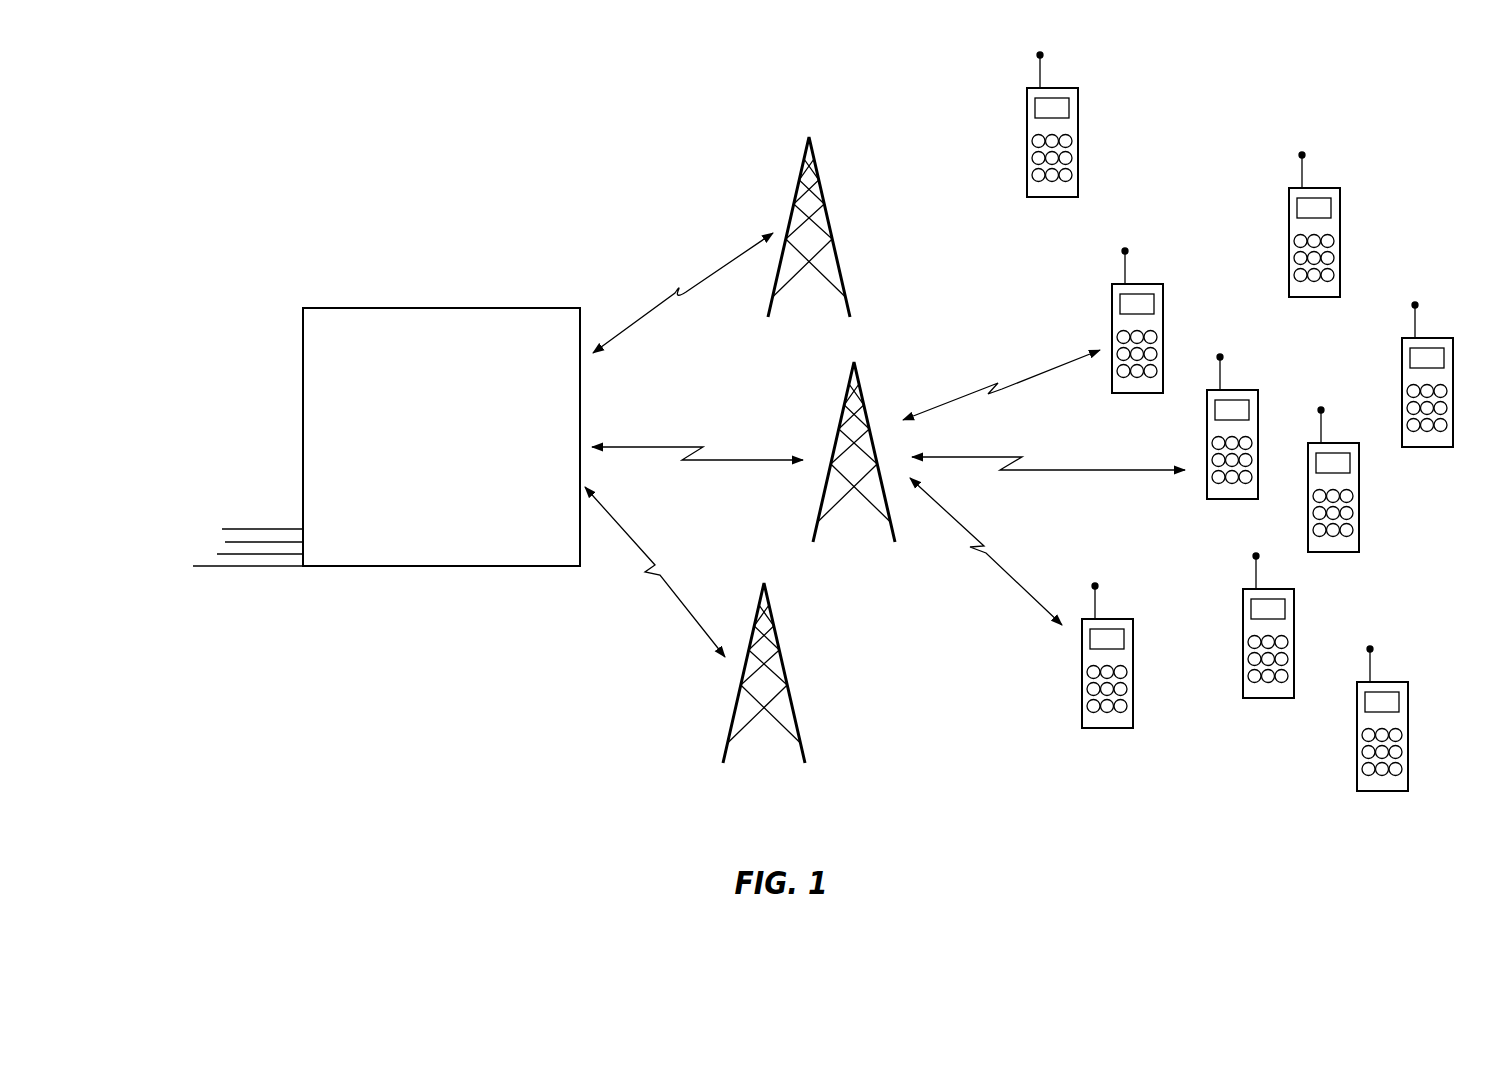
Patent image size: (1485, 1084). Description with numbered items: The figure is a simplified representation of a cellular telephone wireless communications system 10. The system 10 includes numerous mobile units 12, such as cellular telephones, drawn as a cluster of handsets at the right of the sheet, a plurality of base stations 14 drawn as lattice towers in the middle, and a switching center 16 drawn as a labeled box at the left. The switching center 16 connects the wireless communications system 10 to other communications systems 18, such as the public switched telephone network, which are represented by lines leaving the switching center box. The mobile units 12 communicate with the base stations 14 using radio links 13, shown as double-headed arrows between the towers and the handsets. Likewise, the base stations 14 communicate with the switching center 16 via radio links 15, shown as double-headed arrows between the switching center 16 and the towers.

The wireless communications system 10 is at (562, 135).
The mobile units 12 is at (1078, 135).
The radio links 13 is at (968, 392).
The base stations 14 is at (822, 185).
The radio links 15 is at (717, 460).
The switching center 16 is at (430, 357).
The other communications systems 18 is at (260, 573).